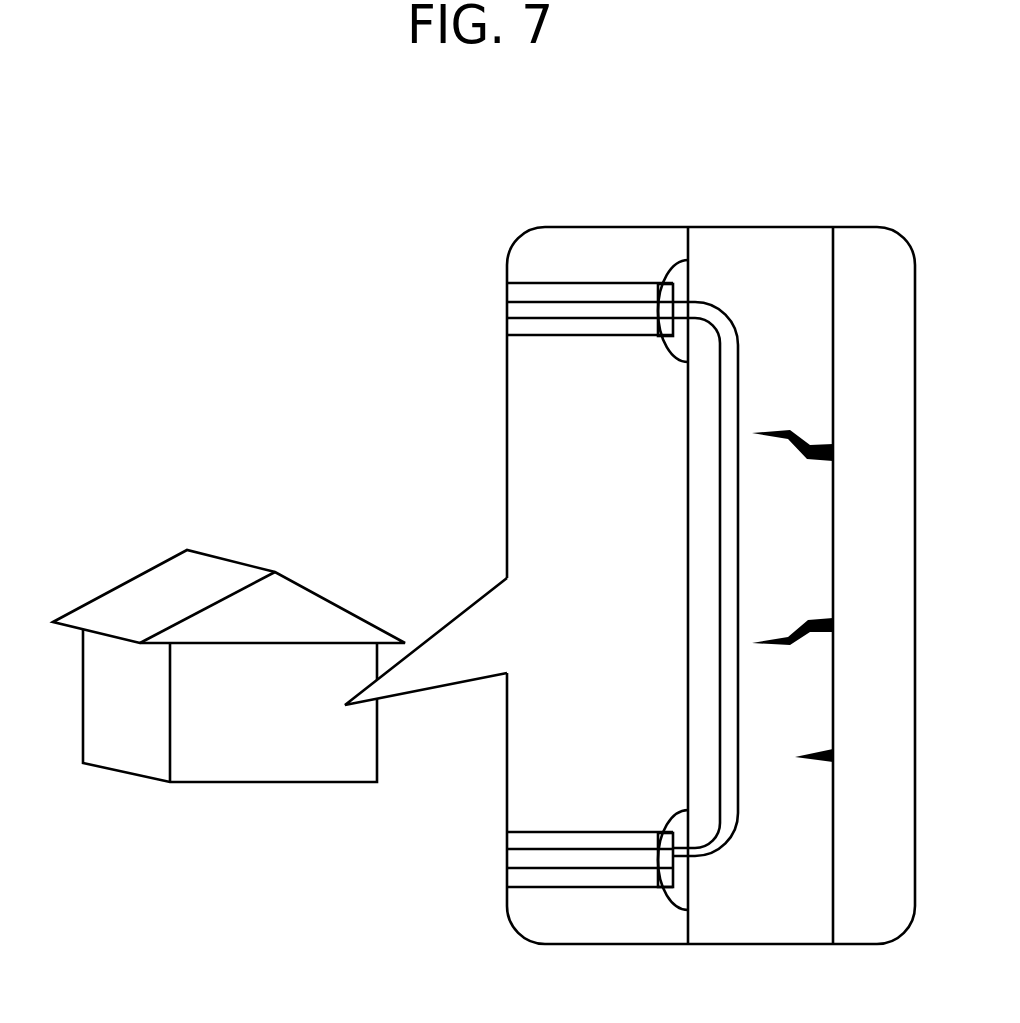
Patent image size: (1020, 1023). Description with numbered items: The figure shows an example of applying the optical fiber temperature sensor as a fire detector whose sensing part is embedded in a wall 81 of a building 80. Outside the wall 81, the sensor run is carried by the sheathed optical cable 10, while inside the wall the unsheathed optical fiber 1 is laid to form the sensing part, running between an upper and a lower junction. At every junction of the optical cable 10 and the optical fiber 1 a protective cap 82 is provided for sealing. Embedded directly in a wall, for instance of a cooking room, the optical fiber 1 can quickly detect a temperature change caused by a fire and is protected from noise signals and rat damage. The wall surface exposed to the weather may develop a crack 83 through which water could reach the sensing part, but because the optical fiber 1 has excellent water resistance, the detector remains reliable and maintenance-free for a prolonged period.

The optical fiber 1 is at (702, 848).
The optical cable 10 is at (572, 882).
The building 80 is at (313, 590).
The wall 81 is at (805, 262).
The protective cap 82 is at (675, 275).
The crack 83 is at (820, 442).